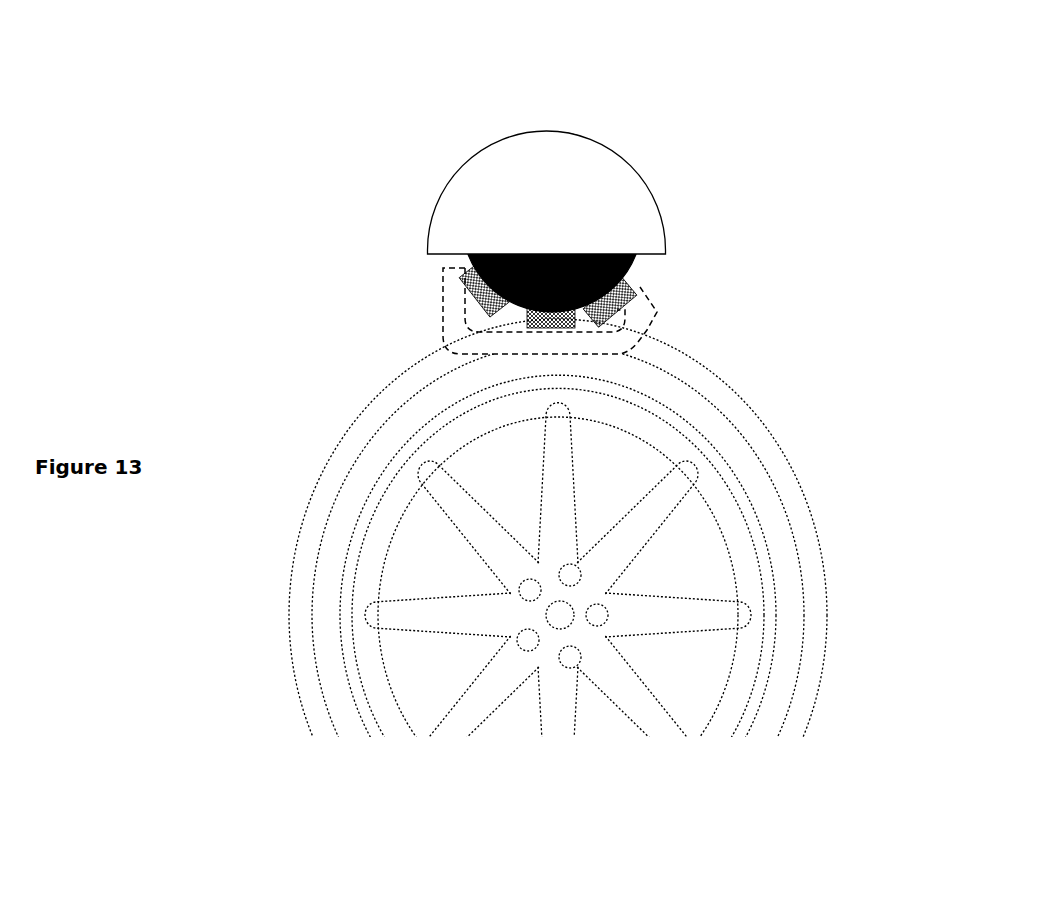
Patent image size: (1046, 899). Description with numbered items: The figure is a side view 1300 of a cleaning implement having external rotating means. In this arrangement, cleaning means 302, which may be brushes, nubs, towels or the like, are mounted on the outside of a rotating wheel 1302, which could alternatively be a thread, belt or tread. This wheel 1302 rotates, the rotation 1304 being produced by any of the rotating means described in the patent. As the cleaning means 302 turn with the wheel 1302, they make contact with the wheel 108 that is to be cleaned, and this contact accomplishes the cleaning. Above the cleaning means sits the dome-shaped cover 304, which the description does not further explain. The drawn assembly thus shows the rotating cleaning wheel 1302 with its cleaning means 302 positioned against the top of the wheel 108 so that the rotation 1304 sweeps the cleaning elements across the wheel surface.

The wheel 108 is at (676, 703).
The cleaning means 302 is at (473, 293).
The dome cover 304 is at (585, 131).
The side view 1300 is at (558, 206).
The wheel 1302 is at (621, 300).
The rotation 1304 is at (458, 345).